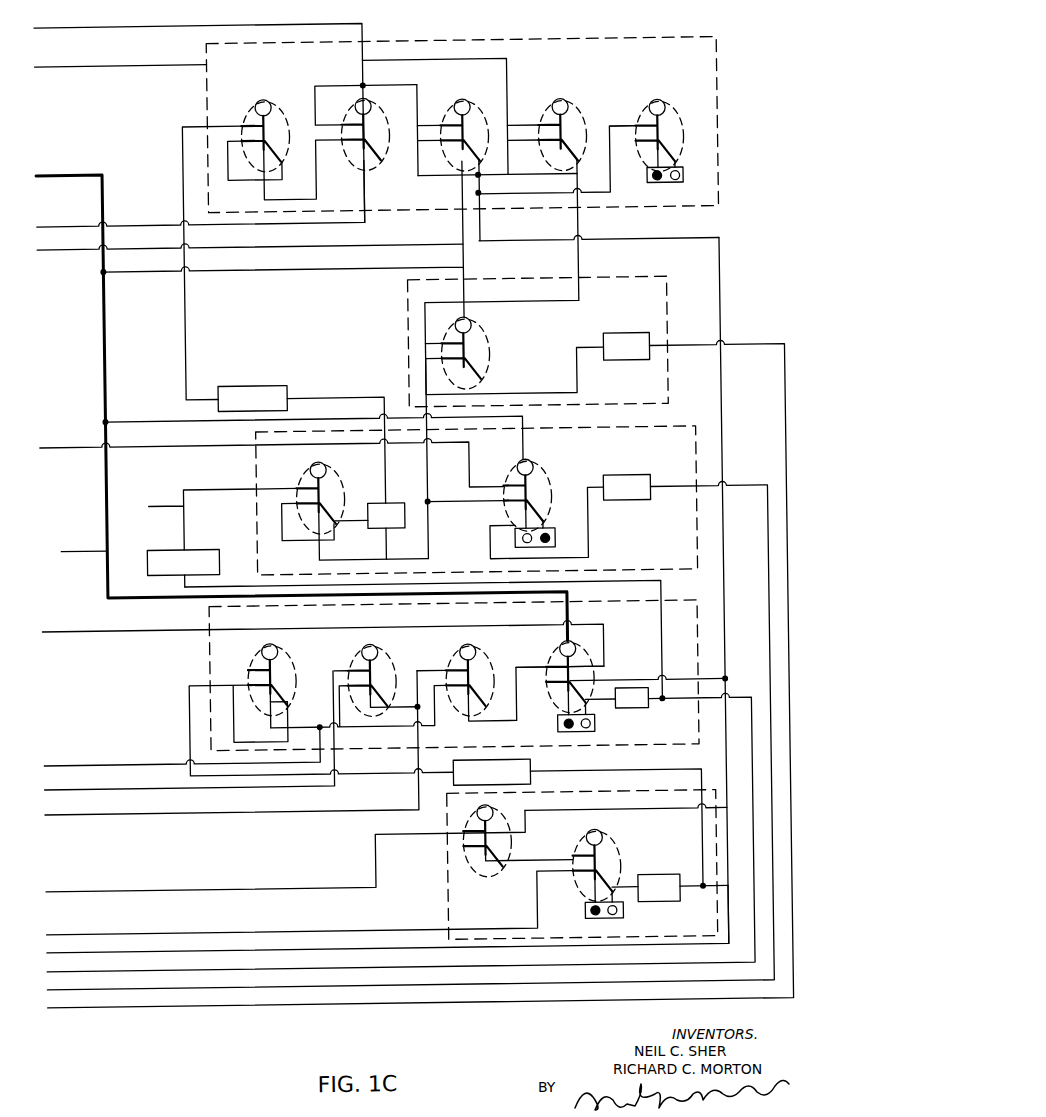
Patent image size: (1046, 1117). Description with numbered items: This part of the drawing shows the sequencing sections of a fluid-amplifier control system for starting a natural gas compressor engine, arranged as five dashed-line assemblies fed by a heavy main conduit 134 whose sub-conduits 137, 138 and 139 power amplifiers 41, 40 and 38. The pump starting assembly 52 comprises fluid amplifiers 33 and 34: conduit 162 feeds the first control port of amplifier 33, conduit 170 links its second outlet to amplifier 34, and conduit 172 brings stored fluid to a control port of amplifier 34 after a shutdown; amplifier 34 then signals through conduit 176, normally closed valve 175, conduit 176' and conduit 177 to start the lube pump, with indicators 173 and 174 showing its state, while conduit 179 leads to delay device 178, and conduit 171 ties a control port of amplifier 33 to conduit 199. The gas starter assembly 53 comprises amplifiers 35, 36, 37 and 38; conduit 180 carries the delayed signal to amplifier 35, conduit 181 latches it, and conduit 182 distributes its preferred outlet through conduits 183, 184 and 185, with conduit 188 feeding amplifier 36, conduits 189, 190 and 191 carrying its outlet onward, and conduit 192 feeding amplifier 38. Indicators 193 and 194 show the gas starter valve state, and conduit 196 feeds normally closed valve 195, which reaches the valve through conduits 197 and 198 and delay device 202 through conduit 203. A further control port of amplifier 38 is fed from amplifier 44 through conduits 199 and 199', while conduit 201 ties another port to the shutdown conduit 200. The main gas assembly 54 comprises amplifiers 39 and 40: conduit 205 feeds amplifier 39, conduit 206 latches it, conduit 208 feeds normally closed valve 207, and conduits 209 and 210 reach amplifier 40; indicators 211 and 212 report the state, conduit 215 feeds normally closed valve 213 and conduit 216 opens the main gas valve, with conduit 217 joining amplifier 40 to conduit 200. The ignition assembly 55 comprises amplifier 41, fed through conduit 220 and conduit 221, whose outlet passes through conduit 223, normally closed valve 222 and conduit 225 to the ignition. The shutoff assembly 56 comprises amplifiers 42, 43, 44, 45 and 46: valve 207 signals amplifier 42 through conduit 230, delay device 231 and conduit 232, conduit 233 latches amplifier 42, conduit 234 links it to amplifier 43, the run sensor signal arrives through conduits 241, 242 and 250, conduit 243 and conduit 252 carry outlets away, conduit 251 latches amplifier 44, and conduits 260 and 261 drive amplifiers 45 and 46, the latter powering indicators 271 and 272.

The fluid amplifier 33 is at (490, 809).
The fluid amplifier 34 is at (597, 835).
The fluid amplifier 35 is at (277, 650).
The fluid amplifier 36 is at (378, 651).
The fluid amplifier 37 is at (487, 652).
The fluid amplifier 38 is at (560, 652).
The fluid amplifier 39 is at (329, 463).
The fluid amplifier 40 is at (539, 463).
The fluid amplifier 41 is at (479, 325).
The fluid amplifier 42 is at (274, 99).
The fluid amplifier 43 is at (374, 101).
The fluid amplifier 44 is at (476, 102).
The fluid amplifier 45 is at (572, 103).
The fluid amplifier 46 is at (669, 105).
The pump starting assembly 52 is at (444, 891).
The gas starter assembly 53 is at (209, 652).
The main gas assembly 54 is at (258, 505).
The ignition assembly 55 is at (412, 354).
The shutoff assembly 56 is at (214, 85).
The main conduit 134 is at (81, 171).
The sub-conduit 137 is at (130, 268).
The sub-conduit 138 is at (133, 418).
The sub-conduit 139 is at (66, 557).
The conduit 162 is at (165, 887).
The conduit 170 is at (517, 862).
The conduit 171 is at (613, 812).
The conduit 172 is at (164, 930).
The indicator 173 is at (580, 918).
The indicator 174 is at (612, 922).
The normally closed valve 175 is at (617, 914).
The conduit 176 is at (646, 879).
The conduit 176' is at (701, 905).
The conduit 177 is at (740, 890).
The delay device 178 is at (528, 767).
The conduit 179 is at (703, 773).
The conduit 180 is at (188, 709).
The conduit 181 is at (260, 716).
The conduit 182 is at (275, 702).
The conduit 183 is at (335, 670).
The conduit 184 is at (111, 766).
The conduit 185 is at (394, 733).
The conduit 188 is at (111, 789).
The conduit 189 is at (404, 713).
The conduit 190 is at (433, 671).
The conduit 191 is at (110, 815).
The conduit 192 is at (505, 729).
The indicator 193 is at (556, 734).
The indicator 194 is at (588, 737).
The normally closed valve 195 is at (617, 712).
The conduit 196 is at (601, 706).
The conduit 197 is at (661, 706).
The conduit 198 is at (655, 704).
The conduit 199 is at (405, 595).
The conduit 199' is at (649, 671).
The conduit 200 is at (180, 58).
The conduit 201 is at (126, 633).
The delay device 202 is at (203, 550).
The conduit 203 is at (661, 584).
The conduit 205 is at (214, 519).
The conduit 206 is at (310, 541).
The normally closed valve 207 is at (383, 502).
The conduit 208 is at (350, 531).
The conduit 209 is at (385, 559).
The conduit 210 is at (502, 504).
The indicator 211 is at (516, 548).
The indicator 212 is at (550, 530).
The normally closed valve 213 is at (638, 478).
The conduit 215 is at (589, 557).
The conduit 216 is at (746, 489).
The conduit 217 is at (132, 443).
The conduit 220 is at (429, 380).
The conduit 221 is at (546, 304).
The normally closed valve 222 is at (620, 363).
The conduit 223 is at (571, 395).
The conduit 225 is at (748, 349).
The conduit 230 is at (189, 320).
The delay device 231 is at (258, 384).
The conduit 232 is at (340, 397).
The conduit 233 is at (260, 176).
The conduit 234 is at (316, 189).
The conduit 241 is at (249, 22).
The conduit 242 is at (362, 82).
The fluid conduit 243 is at (375, 185).
The conduit 250 is at (404, 82).
The conduit 251 is at (462, 178).
The conduit 252 is at (442, 245).
The conduit 260 is at (518, 175).
The conduit 261 is at (530, 196).
The indicator 271 is at (663, 186).
The indicator 272 is at (682, 187).